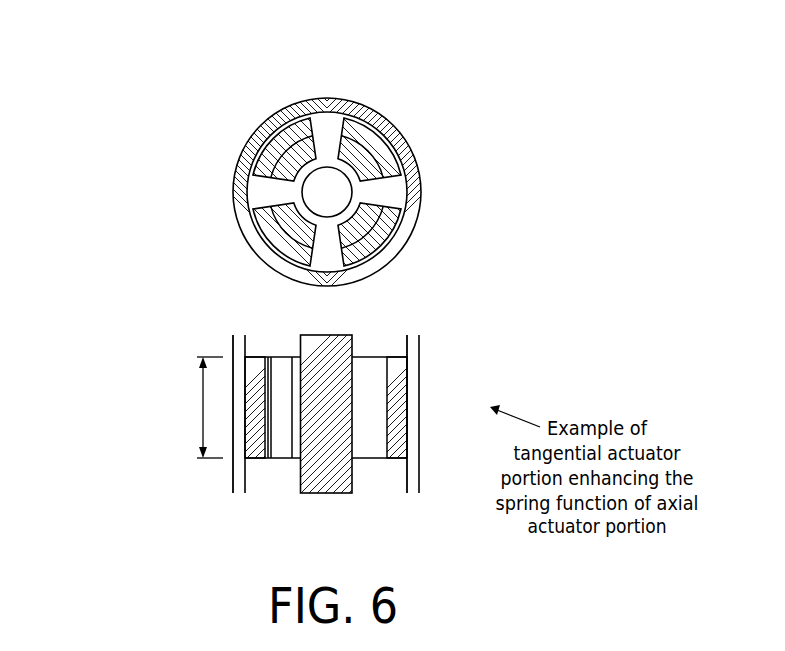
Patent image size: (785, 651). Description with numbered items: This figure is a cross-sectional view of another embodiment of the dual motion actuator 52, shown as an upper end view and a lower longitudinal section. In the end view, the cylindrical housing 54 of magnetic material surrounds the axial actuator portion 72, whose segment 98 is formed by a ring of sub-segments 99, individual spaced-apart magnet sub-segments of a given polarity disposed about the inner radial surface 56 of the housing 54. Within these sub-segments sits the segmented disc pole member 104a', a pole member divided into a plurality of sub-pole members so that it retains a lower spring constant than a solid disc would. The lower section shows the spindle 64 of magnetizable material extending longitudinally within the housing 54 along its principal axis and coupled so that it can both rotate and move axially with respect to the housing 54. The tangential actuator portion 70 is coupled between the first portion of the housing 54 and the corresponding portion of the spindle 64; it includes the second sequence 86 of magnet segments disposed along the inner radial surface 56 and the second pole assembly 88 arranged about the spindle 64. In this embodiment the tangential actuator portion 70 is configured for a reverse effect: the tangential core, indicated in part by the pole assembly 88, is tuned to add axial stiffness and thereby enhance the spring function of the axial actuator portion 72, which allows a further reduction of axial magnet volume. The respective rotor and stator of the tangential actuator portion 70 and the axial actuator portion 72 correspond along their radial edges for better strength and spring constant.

The segment 98 is at (490, 100).
The cylindrical housing 54 is at (300, 112).
The ring of sub-segments 99 is at (277, 140).
The segmented disc pole member 104a' is at (389, 195).
The actuator 52 is at (147, 162).
The axial actuator portion 72 is at (149, 245).
The tangential actuator portion 70 is at (177, 410).
The inner radial surface 56 is at (248, 478).
The spindle 64 is at (325, 480).
The second pole assembly 88 is at (365, 450).
The second sequence of magnet segments 86 is at (398, 450).